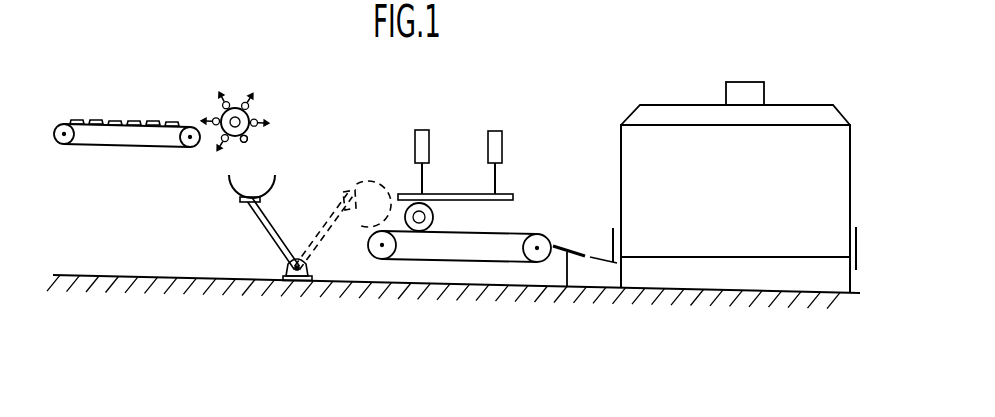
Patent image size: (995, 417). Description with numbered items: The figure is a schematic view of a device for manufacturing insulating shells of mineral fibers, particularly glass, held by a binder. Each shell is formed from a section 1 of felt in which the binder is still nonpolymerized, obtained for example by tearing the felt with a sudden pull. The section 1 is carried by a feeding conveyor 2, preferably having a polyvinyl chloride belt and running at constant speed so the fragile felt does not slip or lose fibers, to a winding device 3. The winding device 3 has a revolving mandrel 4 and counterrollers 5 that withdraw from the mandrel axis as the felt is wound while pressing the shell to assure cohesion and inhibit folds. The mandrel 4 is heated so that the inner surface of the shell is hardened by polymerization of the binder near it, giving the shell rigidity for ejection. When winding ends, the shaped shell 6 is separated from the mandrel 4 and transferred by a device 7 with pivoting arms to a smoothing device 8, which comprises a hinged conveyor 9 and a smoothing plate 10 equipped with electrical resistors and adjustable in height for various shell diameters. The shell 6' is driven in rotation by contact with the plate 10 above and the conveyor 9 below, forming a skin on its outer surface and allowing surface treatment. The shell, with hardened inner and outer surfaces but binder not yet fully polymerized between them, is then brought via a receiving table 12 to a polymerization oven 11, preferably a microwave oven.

The section of felt 1 is at (100, 120).
The feeding conveyor 2 is at (137, 146).
The winding device 3 is at (253, 109).
The revolving mandrel 4 is at (237, 106).
The counterrollers 5 is at (248, 140).
The shaped shell 6 is at (218, 95).
The device with pivoting arms 7 is at (268, 220).
The smoothing device 8 is at (518, 213).
The hinged conveyor 9 is at (433, 262).
The smoothing plate 10 is at (476, 194).
The shell 6' is at (437, 217).
The polymerization oven 11 is at (635, 153).
The receiving table 12 is at (557, 245).